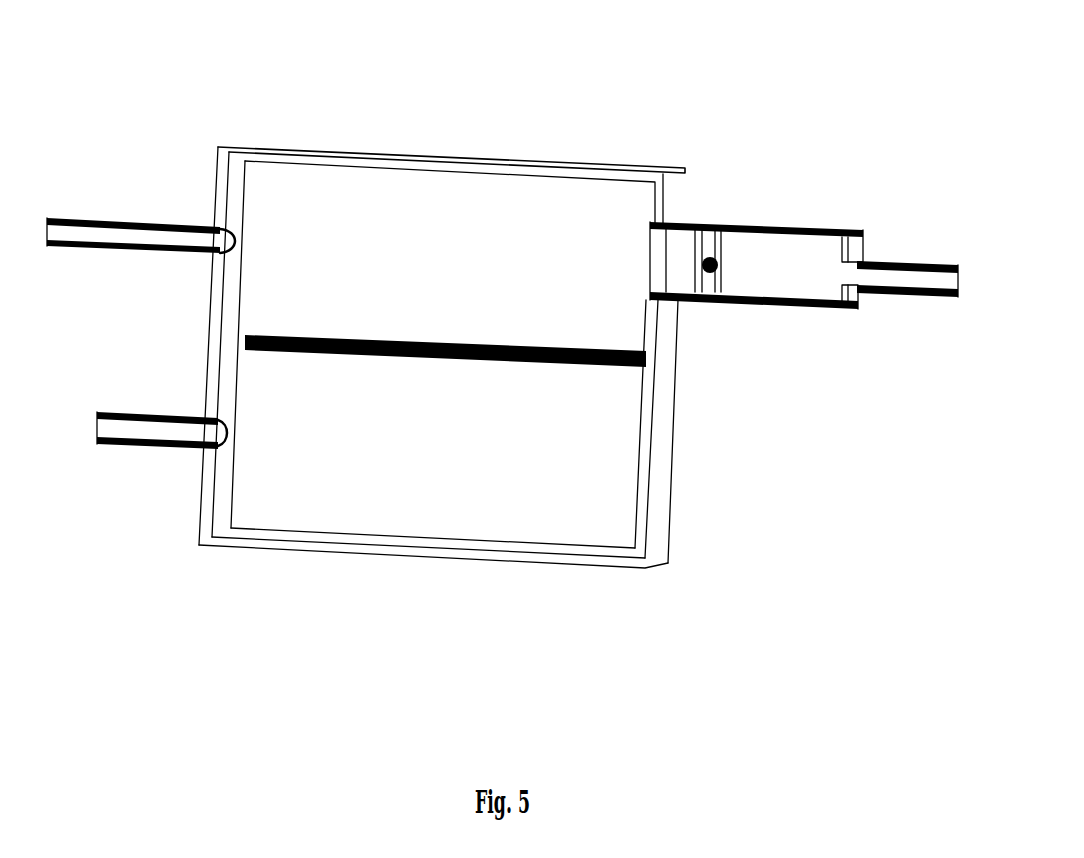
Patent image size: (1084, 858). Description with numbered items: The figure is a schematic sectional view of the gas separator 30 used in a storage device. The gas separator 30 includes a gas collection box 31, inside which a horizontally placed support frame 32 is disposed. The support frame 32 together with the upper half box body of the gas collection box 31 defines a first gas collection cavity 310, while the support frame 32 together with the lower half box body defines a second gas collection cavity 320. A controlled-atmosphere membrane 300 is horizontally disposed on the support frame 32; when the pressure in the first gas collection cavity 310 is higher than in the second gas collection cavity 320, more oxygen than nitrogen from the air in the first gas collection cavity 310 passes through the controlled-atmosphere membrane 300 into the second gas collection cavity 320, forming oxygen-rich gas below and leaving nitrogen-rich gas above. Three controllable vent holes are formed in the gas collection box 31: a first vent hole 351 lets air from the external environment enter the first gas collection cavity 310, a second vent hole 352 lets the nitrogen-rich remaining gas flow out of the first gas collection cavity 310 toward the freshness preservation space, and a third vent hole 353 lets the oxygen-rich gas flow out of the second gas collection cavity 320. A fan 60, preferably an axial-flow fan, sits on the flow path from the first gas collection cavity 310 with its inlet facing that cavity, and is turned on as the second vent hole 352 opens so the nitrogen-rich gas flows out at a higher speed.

The gas separator 30 is at (186, 127).
The gas collection box 31 is at (316, 154).
The support frame 32 is at (243, 342).
The controlled-atmosphere membrane 300 is at (646, 353).
The first gas collection cavity 310 is at (520, 218).
The second gas collection cavity 320 is at (475, 523).
The first vent hole 351 is at (222, 237).
The second vent hole 352 is at (645, 262).
The third vent hole 353 is at (215, 433).
The fan 60 is at (720, 247).